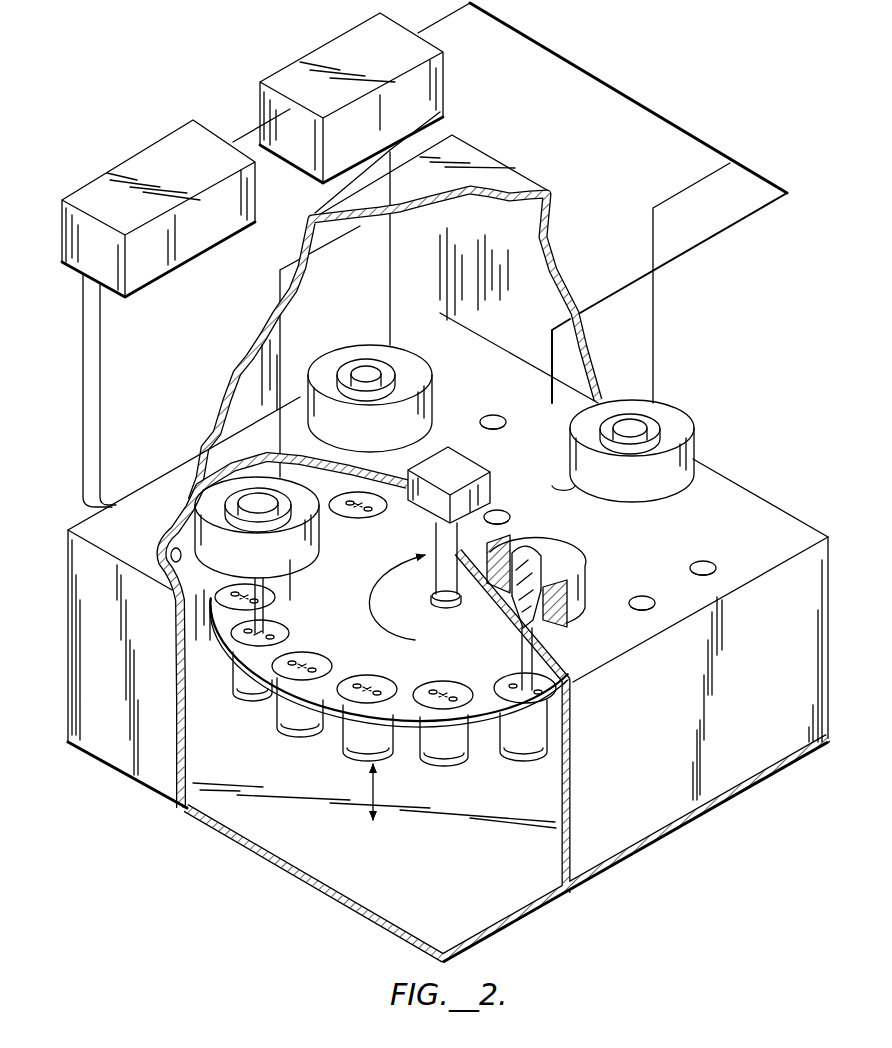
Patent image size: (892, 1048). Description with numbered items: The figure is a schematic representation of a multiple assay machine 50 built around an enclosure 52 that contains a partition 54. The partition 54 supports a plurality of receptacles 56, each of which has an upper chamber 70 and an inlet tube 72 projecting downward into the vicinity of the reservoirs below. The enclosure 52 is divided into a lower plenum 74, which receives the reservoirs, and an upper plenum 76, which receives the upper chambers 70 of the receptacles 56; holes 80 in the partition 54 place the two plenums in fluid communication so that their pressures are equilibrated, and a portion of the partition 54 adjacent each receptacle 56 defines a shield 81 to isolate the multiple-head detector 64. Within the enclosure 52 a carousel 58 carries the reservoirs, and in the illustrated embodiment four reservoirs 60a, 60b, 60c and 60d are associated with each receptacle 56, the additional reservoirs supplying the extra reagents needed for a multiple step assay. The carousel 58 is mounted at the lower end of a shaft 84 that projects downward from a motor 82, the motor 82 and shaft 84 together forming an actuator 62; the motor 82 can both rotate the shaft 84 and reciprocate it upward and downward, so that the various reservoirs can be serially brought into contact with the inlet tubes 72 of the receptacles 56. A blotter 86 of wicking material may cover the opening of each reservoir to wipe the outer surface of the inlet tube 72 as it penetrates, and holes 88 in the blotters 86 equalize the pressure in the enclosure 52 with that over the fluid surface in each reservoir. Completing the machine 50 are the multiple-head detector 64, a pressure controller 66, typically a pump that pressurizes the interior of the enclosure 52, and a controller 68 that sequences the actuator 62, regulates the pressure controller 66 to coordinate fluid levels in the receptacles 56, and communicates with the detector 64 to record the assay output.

The multiple assay machine 50 is at (118, 96).
The enclosure 52 is at (493, 178).
The partition 54 is at (742, 497).
The receptacle 56 is at (397, 385).
The carousel 58 is at (458, 760).
The reservoir 60a is at (252, 695).
The reservoir 60b is at (302, 730).
The reservoir 60c is at (362, 748).
The reservoir 60d is at (420, 767).
The actuator 62 is at (478, 485).
The multiple-head detector 64 is at (428, 421).
The pressure controller 66 is at (138, 263).
The controller 68 is at (318, 66).
The upper chamber 70 is at (362, 373).
The inlet tube 72 is at (266, 614).
The lower plenum 74 is at (287, 837).
The upper plenum 76 is at (510, 267).
The hole 80 is at (495, 417).
The shield 81 is at (550, 633).
The motor 82 is at (462, 484).
The shaft 84 is at (436, 575).
The blotter 86 is at (378, 683).
The hole 88 is at (455, 676).